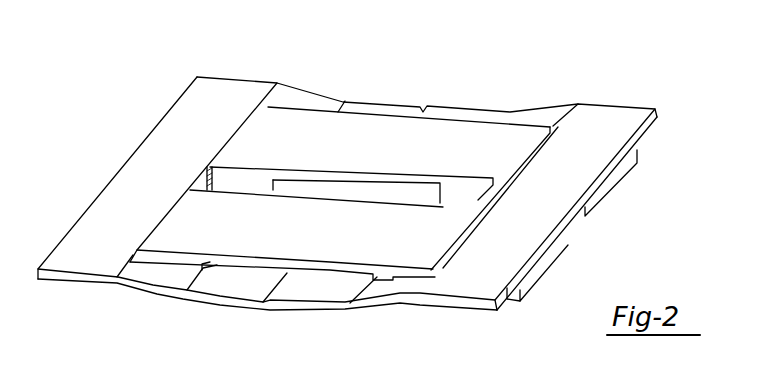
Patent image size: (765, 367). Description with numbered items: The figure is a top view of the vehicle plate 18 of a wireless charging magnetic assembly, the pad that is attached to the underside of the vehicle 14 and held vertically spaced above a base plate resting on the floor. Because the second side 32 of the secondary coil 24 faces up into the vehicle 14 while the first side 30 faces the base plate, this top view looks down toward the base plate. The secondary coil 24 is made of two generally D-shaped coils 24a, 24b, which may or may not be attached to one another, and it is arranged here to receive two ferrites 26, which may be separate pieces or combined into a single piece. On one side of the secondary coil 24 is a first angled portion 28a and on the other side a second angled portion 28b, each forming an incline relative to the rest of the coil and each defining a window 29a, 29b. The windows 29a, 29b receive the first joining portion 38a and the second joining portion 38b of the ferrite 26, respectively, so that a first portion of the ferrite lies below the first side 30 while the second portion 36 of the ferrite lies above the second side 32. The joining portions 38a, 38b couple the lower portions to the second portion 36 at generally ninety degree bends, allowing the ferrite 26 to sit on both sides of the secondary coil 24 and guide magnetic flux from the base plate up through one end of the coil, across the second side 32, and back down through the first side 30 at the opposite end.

The vehicle 14 is at (128, 34).
The vehicle plate 18 is at (652, 54).
The secondary coil 24 is at (497, 36).
The D-shaped coil 24a is at (137, 167).
The D-shaped coil 24b is at (592, 120).
The ferrite 26 is at (300, 127).
The first angled portion 28a is at (130, 285).
The second angled portion 28b is at (385, 306).
The window 29a is at (205, 185).
The window 29b is at (485, 205).
The first side 30 is at (452, 311).
The second side 32 is at (627, 123).
The second portion 36 is at (447, 143).
The first joining portion 38a is at (167, 252).
The second joining portion 38b is at (393, 271).